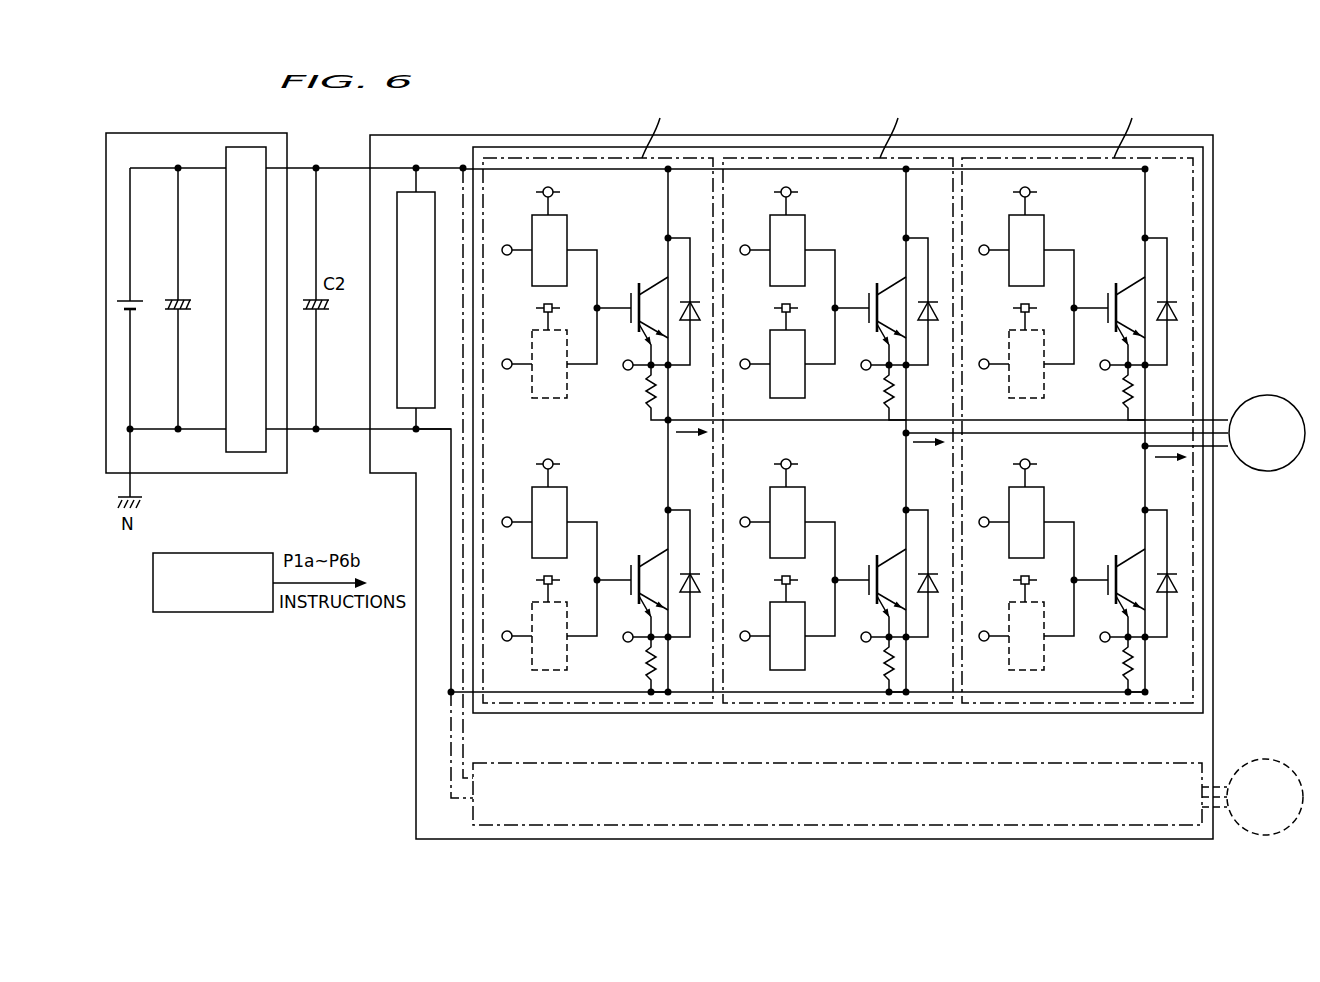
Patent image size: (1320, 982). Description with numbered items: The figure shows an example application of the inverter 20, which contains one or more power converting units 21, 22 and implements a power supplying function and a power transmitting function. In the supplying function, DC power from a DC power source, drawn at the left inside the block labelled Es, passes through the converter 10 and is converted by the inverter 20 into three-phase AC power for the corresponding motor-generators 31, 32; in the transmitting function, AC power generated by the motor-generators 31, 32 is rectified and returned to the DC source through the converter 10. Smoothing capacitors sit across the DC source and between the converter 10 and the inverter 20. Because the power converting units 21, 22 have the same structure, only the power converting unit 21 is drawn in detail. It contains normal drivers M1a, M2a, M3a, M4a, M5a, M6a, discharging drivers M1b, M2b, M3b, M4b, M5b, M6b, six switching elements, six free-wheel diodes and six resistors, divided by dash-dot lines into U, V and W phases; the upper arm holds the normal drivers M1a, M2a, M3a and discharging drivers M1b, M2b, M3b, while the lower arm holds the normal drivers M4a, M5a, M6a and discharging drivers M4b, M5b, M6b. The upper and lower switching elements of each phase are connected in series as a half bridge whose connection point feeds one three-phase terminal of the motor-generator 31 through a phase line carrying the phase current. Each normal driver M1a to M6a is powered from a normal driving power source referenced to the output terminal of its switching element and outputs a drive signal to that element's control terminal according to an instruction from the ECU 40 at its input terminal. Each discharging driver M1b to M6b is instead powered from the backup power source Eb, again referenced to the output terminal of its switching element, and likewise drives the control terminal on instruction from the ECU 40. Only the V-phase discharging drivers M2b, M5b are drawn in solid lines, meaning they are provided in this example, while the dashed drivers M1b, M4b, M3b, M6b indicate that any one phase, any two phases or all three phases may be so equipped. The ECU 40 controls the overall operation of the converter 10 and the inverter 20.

The converter 10 is at (238, 147).
The inverter 20 is at (1205, 140).
The power converting unit 21 is at (1205, 232).
The power converting unit 22 is at (1178, 763).
The motor-generator 31 is at (1268, 395).
The motor-generator 32 is at (1268, 759).
The ECU 40 is at (215, 553).
The power storage device Es is at (166, 133).
The backup power source Eb is at (430, 192).
The normal driver M1a is at (567, 218).
The discharging driver M1b is at (567, 330).
The normal driver M2a is at (802, 191).
The discharging driver M2b is at (819, 301).
The normal driver M3a is at (1041, 191).
The discharging driver M3b is at (1058, 301).
The normal driver M4a is at (580, 517).
The discharging driver M4b is at (548, 675).
The normal driver M5a is at (818, 517).
The discharging driver M5b is at (786, 675).
The normal driver M6a is at (1057, 517).
The discharging driver M6b is at (1025, 675).